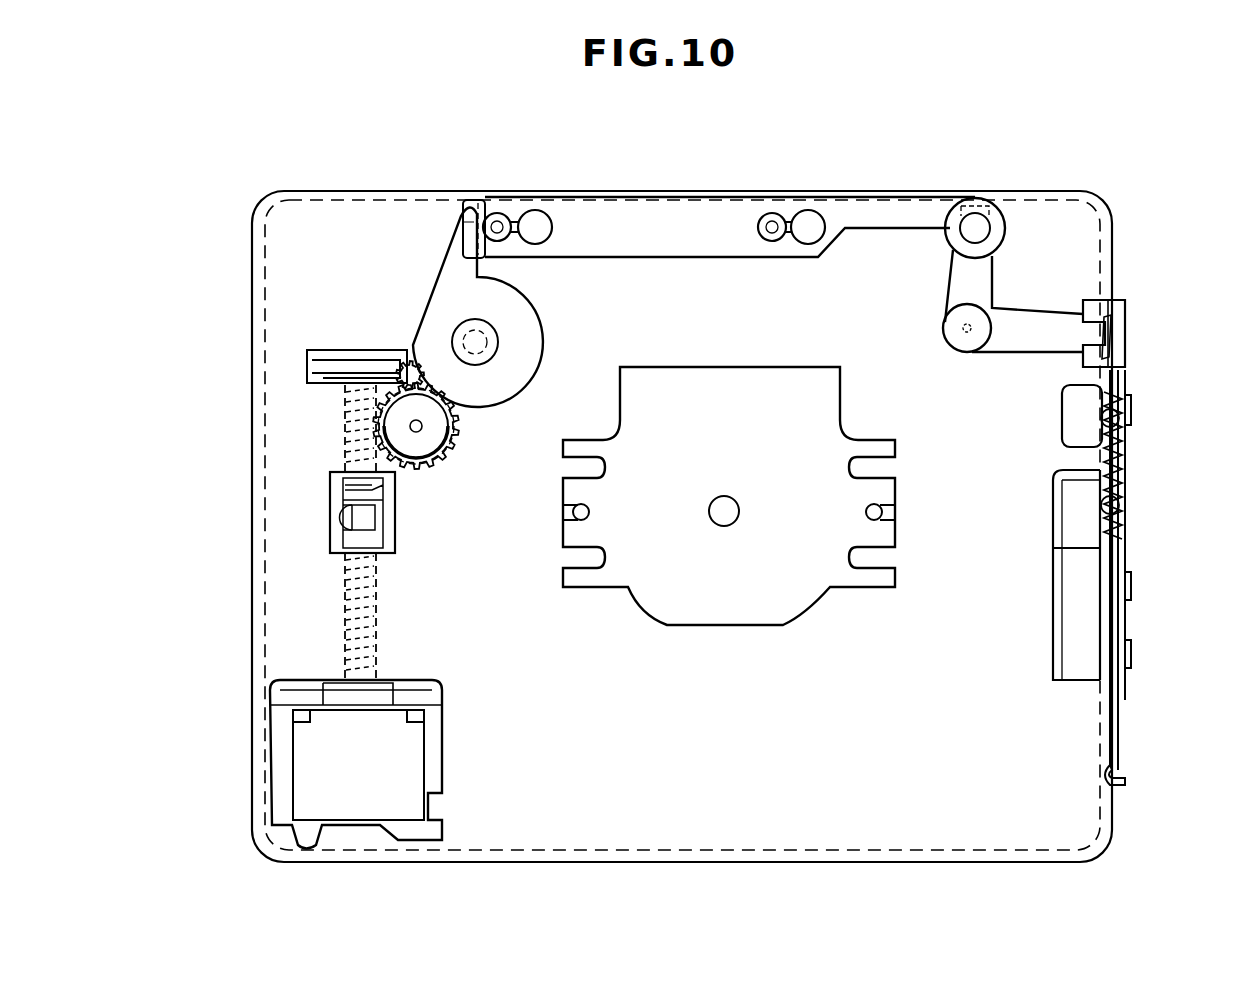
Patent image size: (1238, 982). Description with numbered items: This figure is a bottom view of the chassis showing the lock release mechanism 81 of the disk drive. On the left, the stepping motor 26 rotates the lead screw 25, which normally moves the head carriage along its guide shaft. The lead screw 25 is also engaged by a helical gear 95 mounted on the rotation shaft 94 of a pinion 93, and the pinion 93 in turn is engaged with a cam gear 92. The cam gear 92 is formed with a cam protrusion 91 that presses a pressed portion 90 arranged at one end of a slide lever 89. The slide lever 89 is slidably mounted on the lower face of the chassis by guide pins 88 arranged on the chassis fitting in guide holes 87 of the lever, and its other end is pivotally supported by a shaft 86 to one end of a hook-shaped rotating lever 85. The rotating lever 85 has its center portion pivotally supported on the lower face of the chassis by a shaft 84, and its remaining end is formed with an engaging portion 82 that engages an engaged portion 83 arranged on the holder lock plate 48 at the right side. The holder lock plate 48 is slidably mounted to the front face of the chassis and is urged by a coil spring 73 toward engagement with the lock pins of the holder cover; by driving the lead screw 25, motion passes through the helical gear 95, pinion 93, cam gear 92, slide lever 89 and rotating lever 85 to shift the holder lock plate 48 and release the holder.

The lead screw 25 is at (342, 441).
The stepping motor 26 is at (315, 760).
The holder lock plate 48 is at (1130, 378).
The coil spring 73 is at (1125, 456).
The lock release mechanism 81 is at (852, 309).
The engaging portion 82 is at (1113, 297).
The engaged portion 83 is at (1113, 312).
The shaft 84 is at (1096, 195).
The rotating lever 85 is at (983, 275).
The shaft 86 is at (975, 217).
The guide holes 87 is at (524, 212).
The guide pins 88 is at (497, 213).
The slide lever 89 is at (652, 212).
The pressed portion 90 is at (473, 214).
The cam protrusion 91 is at (453, 258).
The cam gear 92 is at (413, 290).
The pinion 93 is at (411, 420).
The rotation shaft 94 is at (395, 366).
The helical gear 95 is at (375, 399).